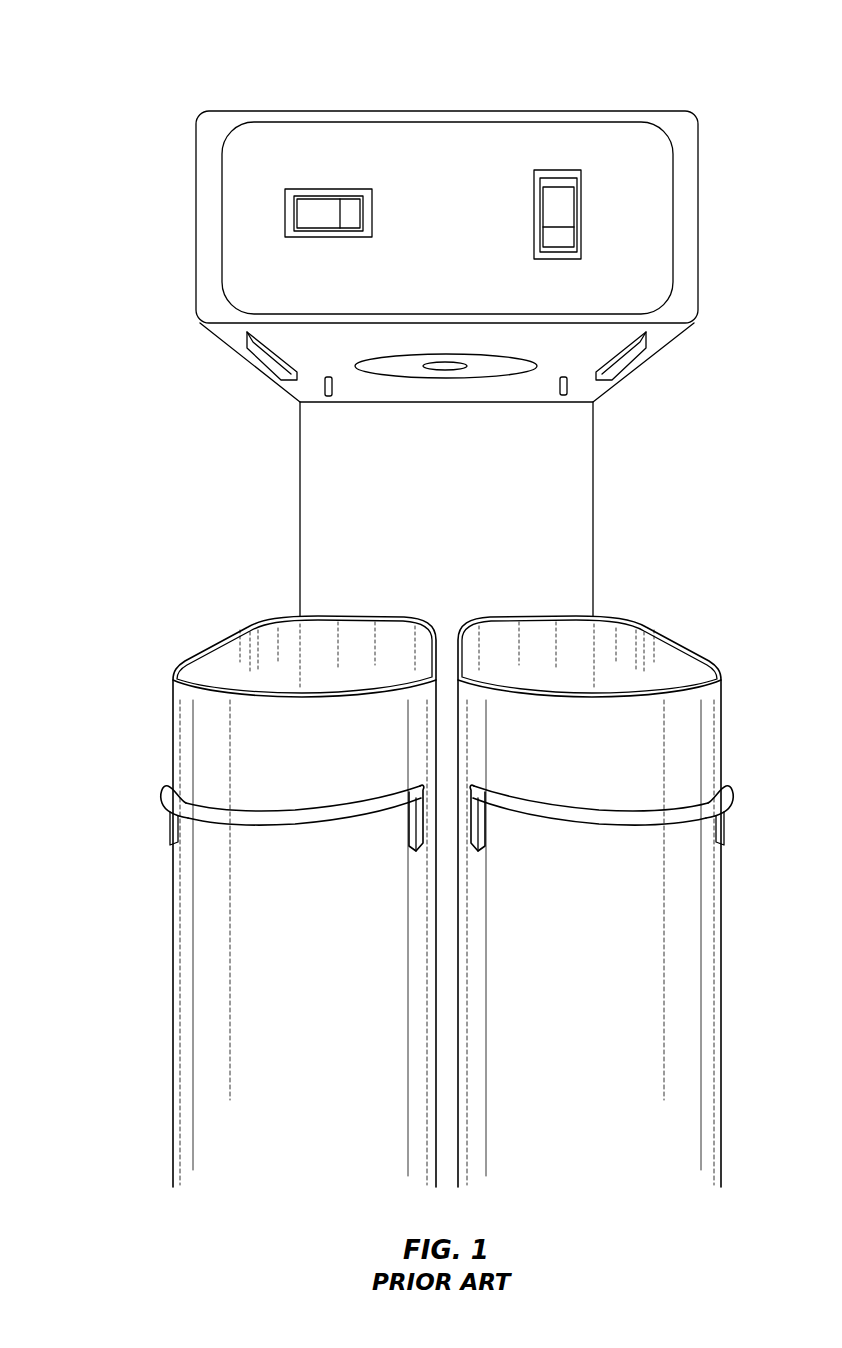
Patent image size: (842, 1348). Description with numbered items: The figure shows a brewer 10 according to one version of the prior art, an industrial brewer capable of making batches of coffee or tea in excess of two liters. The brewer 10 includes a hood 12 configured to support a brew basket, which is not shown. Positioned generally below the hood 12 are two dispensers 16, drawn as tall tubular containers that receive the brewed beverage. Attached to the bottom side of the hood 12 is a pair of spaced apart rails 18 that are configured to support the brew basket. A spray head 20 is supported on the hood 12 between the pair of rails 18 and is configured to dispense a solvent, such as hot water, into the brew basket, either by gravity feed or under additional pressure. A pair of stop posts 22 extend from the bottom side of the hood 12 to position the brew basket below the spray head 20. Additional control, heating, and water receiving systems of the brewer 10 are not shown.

The brewer 10 is at (630, 53).
The hood 12 is at (196, 209).
The dispensers 16 is at (213, 989).
The rails 18 is at (258, 357).
The spray head 20 is at (465, 368).
The stop posts 22 is at (321, 386).